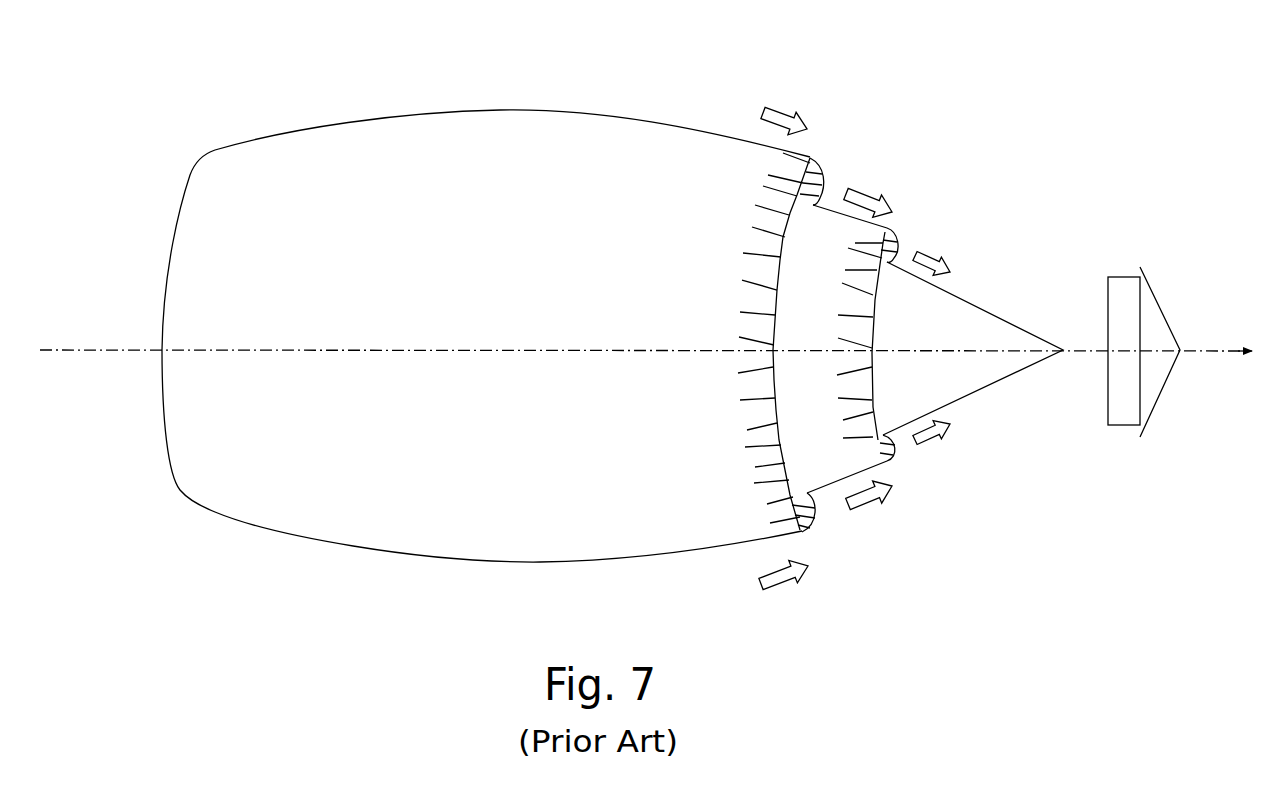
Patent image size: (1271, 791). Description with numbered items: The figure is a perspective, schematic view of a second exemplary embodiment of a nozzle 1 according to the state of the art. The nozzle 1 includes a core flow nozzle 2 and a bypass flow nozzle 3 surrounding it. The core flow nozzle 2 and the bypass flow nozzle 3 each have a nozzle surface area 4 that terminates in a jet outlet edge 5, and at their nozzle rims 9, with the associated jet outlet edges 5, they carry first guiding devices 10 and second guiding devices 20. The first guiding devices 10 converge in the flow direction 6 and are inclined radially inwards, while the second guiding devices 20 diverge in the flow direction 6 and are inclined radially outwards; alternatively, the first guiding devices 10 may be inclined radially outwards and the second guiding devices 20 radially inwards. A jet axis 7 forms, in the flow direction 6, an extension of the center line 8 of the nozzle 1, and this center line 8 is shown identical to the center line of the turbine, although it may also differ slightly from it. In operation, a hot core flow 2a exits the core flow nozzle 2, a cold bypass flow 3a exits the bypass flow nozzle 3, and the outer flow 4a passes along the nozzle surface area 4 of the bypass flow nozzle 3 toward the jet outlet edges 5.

The nozzle 1 is at (466, 88).
The core flow nozzle 2 is at (822, 203).
The hot core flow 2a is at (929, 251).
The bypass flow nozzle 3 is at (706, 130).
The cold bypass flow 3a is at (870, 189).
The nozzle surface area 4 is at (716, 176).
The outer flow 4a is at (783, 108).
The jet outlet edge 5 is at (816, 151).
The flow direction 6 is at (1231, 337).
The jet axis 7 is at (1188, 336).
The center line 8 is at (374, 347).
The nozzle rim 9 is at (894, 474).
The first guiding devices 10 is at (750, 230).
The second guiding devices 20 is at (748, 275).